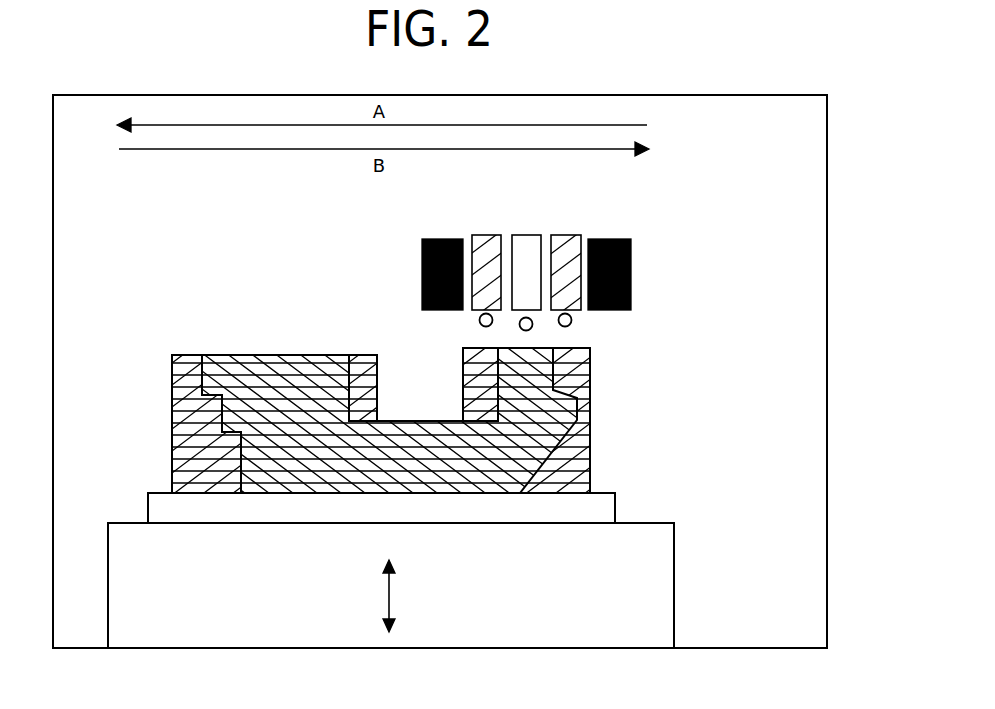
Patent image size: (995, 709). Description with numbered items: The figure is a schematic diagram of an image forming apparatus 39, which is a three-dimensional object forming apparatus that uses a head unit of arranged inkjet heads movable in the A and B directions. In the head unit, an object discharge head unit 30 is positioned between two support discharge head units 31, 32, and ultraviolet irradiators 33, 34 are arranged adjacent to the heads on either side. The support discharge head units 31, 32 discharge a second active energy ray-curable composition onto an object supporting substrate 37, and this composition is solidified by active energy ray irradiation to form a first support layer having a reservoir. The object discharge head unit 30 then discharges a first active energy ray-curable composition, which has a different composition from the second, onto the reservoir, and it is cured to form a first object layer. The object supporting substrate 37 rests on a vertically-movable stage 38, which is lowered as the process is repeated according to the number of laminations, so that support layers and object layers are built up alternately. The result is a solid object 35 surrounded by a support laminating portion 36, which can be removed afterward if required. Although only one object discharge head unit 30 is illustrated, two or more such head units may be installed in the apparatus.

The object discharge head unit 30 is at (528, 235).
The support discharge head unit 31 is at (488, 235).
The support discharge head unit 32 is at (567, 235).
The ultraviolet irradiator 33 is at (422, 248).
The ultraviolet irradiator 34 is at (631, 250).
The solid object 35 is at (277, 355).
The support laminating portion 36 is at (590, 381).
The object supporting substrate 37 is at (617, 505).
The vertically-movable stage 38 is at (674, 533).
The image forming apparatus 39 is at (827, 115).